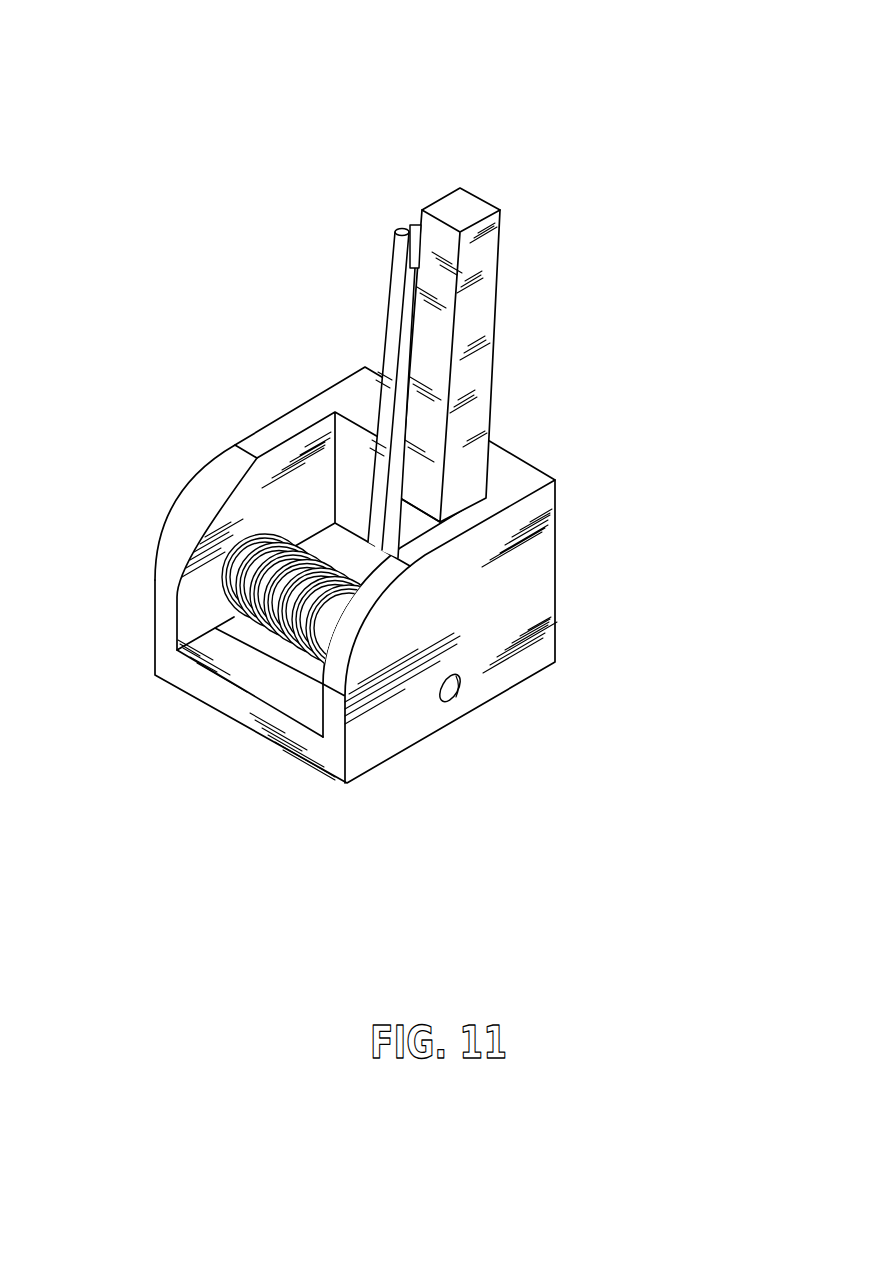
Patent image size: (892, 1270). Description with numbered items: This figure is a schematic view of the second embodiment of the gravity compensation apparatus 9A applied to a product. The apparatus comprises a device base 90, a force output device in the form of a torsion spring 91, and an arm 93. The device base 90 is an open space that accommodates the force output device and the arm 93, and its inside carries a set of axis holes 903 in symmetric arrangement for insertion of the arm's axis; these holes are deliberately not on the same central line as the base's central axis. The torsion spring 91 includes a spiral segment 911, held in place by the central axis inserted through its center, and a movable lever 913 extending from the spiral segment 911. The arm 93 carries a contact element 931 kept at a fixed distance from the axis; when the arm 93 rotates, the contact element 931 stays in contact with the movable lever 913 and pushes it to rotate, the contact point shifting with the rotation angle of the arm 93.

The gravity compensation apparatus 9A is at (405, 391).
The device base 90 is at (530, 555).
The axis holes 903 is at (452, 687).
The torsion spring 91 is at (285, 450).
The spiral segment 911 is at (274, 560).
The movable lever 913 is at (396, 331).
The arm 93 is at (476, 317).
The contact element 931 is at (412, 252).